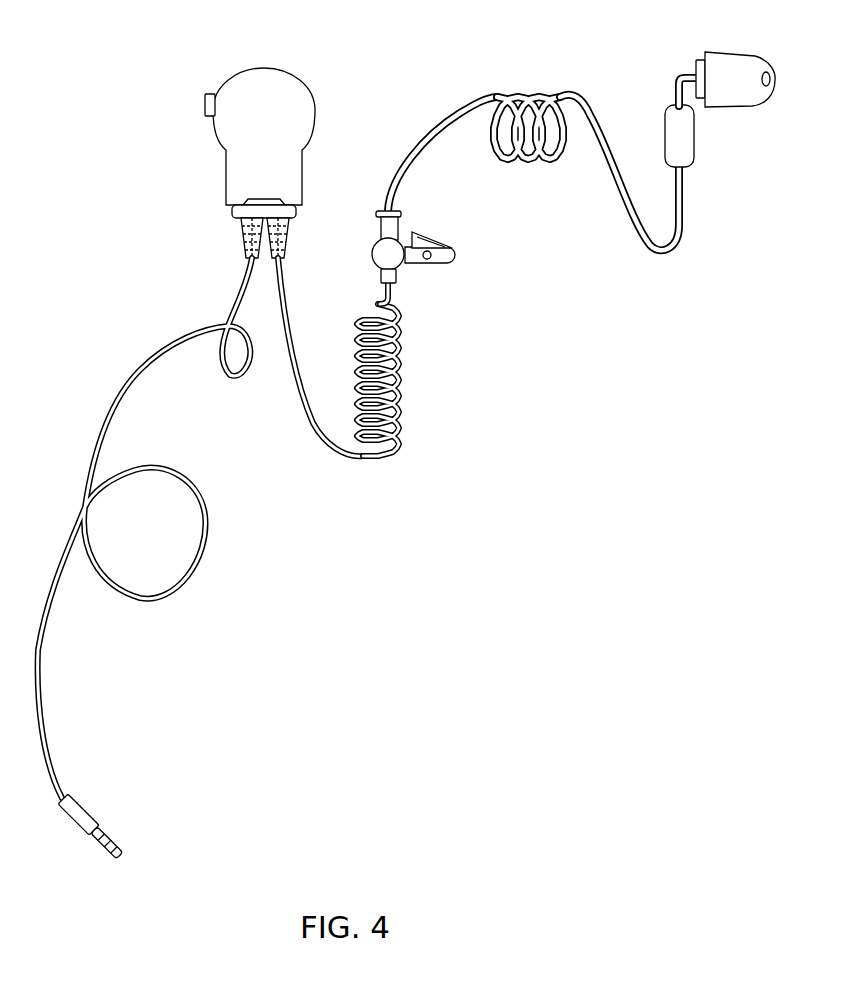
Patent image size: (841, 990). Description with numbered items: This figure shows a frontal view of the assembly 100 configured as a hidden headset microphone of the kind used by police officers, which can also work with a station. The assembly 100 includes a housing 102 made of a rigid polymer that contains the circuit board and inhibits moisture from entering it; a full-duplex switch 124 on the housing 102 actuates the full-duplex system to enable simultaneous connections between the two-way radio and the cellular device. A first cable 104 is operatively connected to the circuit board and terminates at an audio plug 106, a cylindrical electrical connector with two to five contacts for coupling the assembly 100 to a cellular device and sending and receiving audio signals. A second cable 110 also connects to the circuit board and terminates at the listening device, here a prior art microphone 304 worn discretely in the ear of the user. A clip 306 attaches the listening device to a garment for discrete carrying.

The assembly 100 is at (133, 88).
The housing 102 is at (312, 108).
The full-duplex switch 124 is at (211, 93).
The first cable 104 is at (98, 433).
The audio plug 106 is at (98, 818).
The second cable 110 is at (543, 150).
The prior art microphone 304 is at (727, 93).
The clip 306 is at (433, 262).